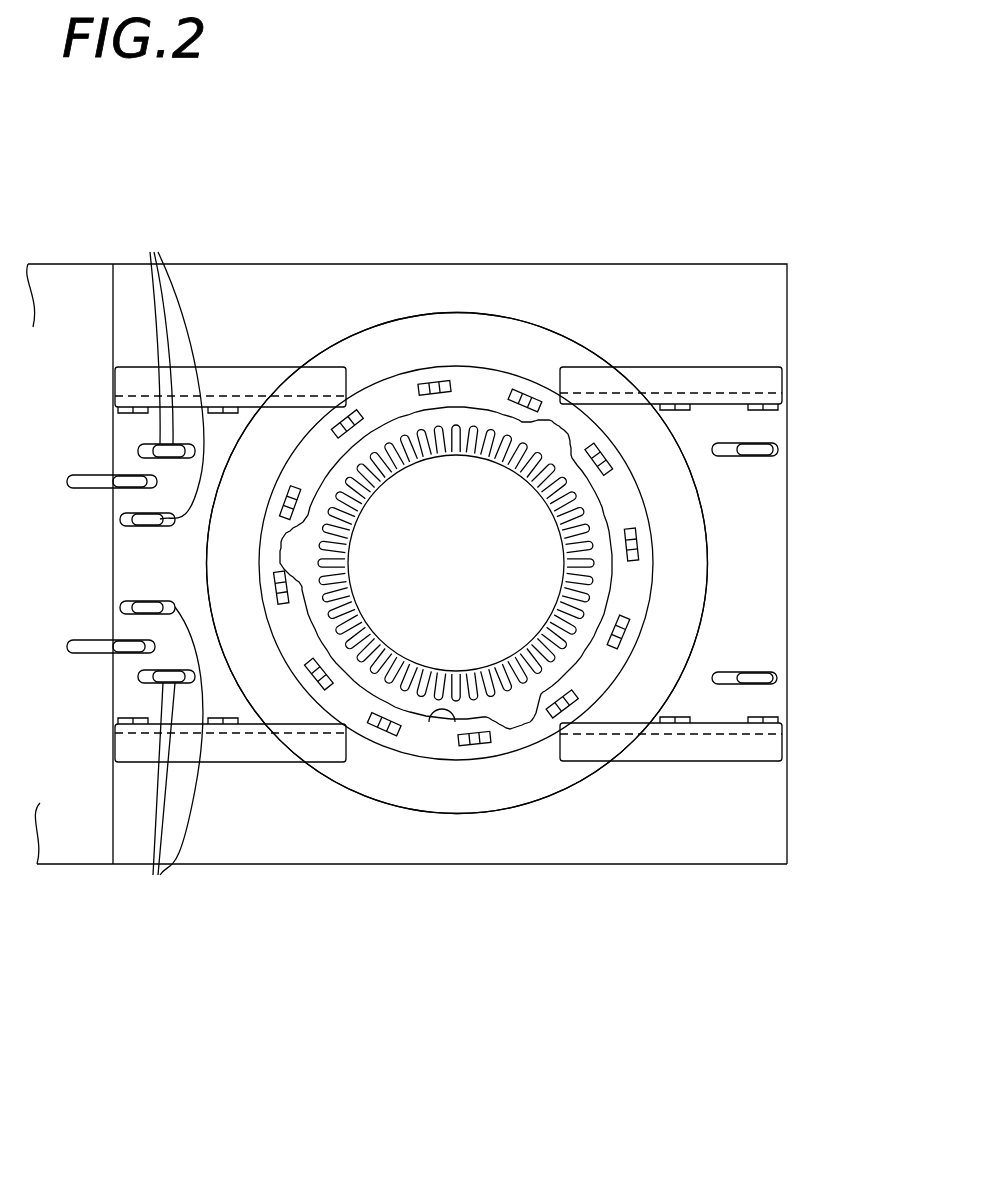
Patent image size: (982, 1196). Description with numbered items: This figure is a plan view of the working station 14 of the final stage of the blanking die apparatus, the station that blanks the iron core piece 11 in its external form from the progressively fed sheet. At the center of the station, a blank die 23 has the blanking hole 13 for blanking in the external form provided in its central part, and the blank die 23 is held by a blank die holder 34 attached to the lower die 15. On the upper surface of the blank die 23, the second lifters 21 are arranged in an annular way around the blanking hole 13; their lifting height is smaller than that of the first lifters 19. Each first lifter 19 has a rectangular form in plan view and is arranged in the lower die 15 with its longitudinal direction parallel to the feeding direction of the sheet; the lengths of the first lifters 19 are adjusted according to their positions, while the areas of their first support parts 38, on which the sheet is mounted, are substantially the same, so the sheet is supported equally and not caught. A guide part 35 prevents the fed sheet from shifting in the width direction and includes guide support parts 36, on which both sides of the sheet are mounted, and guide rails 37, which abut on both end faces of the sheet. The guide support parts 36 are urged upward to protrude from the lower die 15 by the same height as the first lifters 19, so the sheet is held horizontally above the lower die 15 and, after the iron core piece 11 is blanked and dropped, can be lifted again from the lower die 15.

The iron core piece 11 is at (468, 395).
The blanking hole for blanking in the external form 13 is at (455, 717).
The working station of a final stage 14 is at (395, 308).
The lower die 15 is at (668, 870).
The first lifter 19 is at (120, 519).
The second lifter 21 is at (300, 662).
The blank die 23 is at (527, 737).
The blank die holder 34 is at (412, 792).
The guide part 35 is at (763, 772).
The guide support part 36 is at (122, 382).
The guide rail 37 is at (262, 728).
The first support part 38 is at (820, 708).